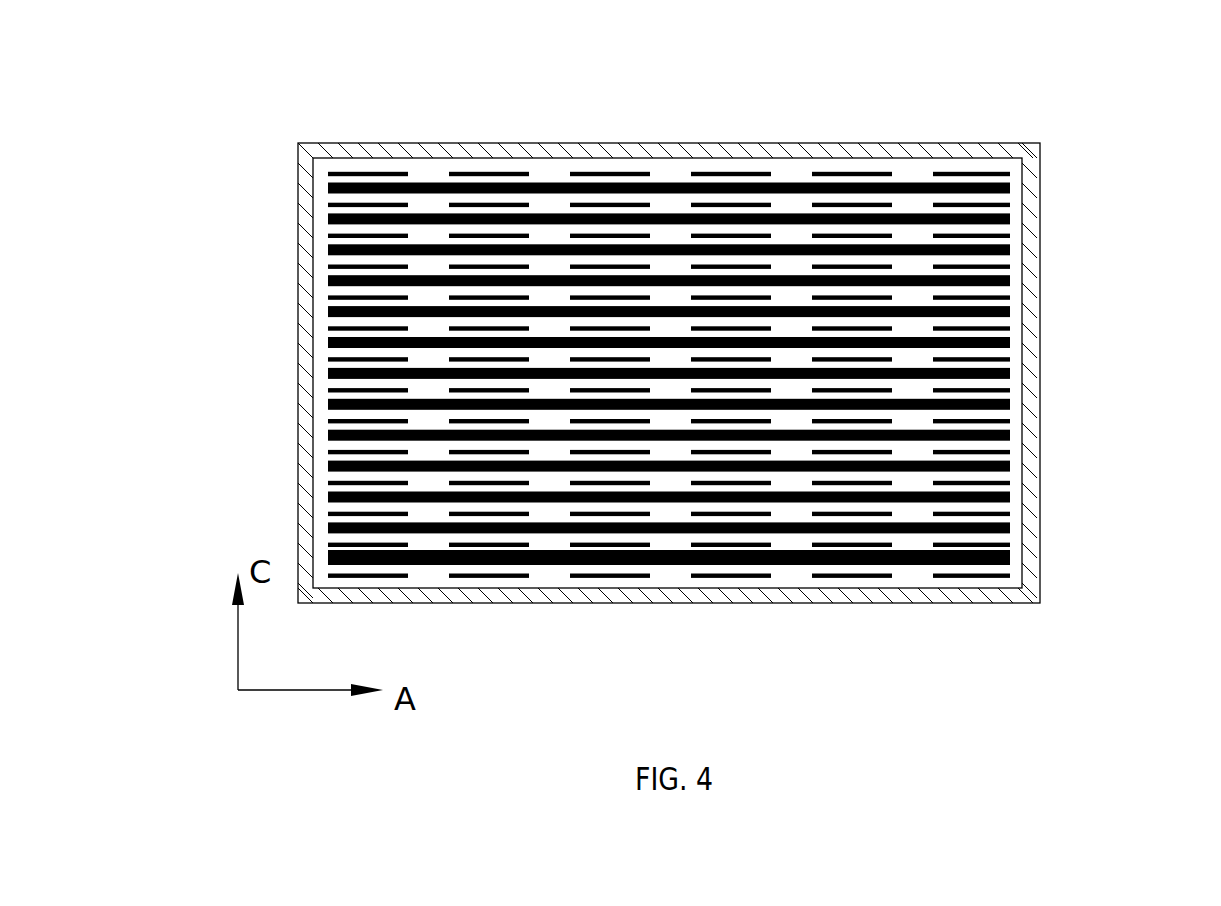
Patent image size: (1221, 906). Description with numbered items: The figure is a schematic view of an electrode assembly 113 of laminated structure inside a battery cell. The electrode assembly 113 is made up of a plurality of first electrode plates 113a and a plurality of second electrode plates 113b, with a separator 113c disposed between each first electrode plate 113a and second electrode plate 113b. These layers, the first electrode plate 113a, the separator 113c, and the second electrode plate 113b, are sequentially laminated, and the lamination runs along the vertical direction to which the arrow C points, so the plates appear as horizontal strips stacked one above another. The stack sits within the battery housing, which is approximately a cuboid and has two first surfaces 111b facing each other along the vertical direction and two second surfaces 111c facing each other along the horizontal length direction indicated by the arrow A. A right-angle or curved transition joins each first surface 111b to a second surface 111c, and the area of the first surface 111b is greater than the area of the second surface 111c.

The first surface 111b is at (685, 147).
The second surface 111c is at (300, 343).
The electrode assembly 113 is at (763, 317).
The first electrode plate 113a is at (995, 272).
The second electrode plate 113b is at (1010, 327).
The separator 113c is at (1008, 292).